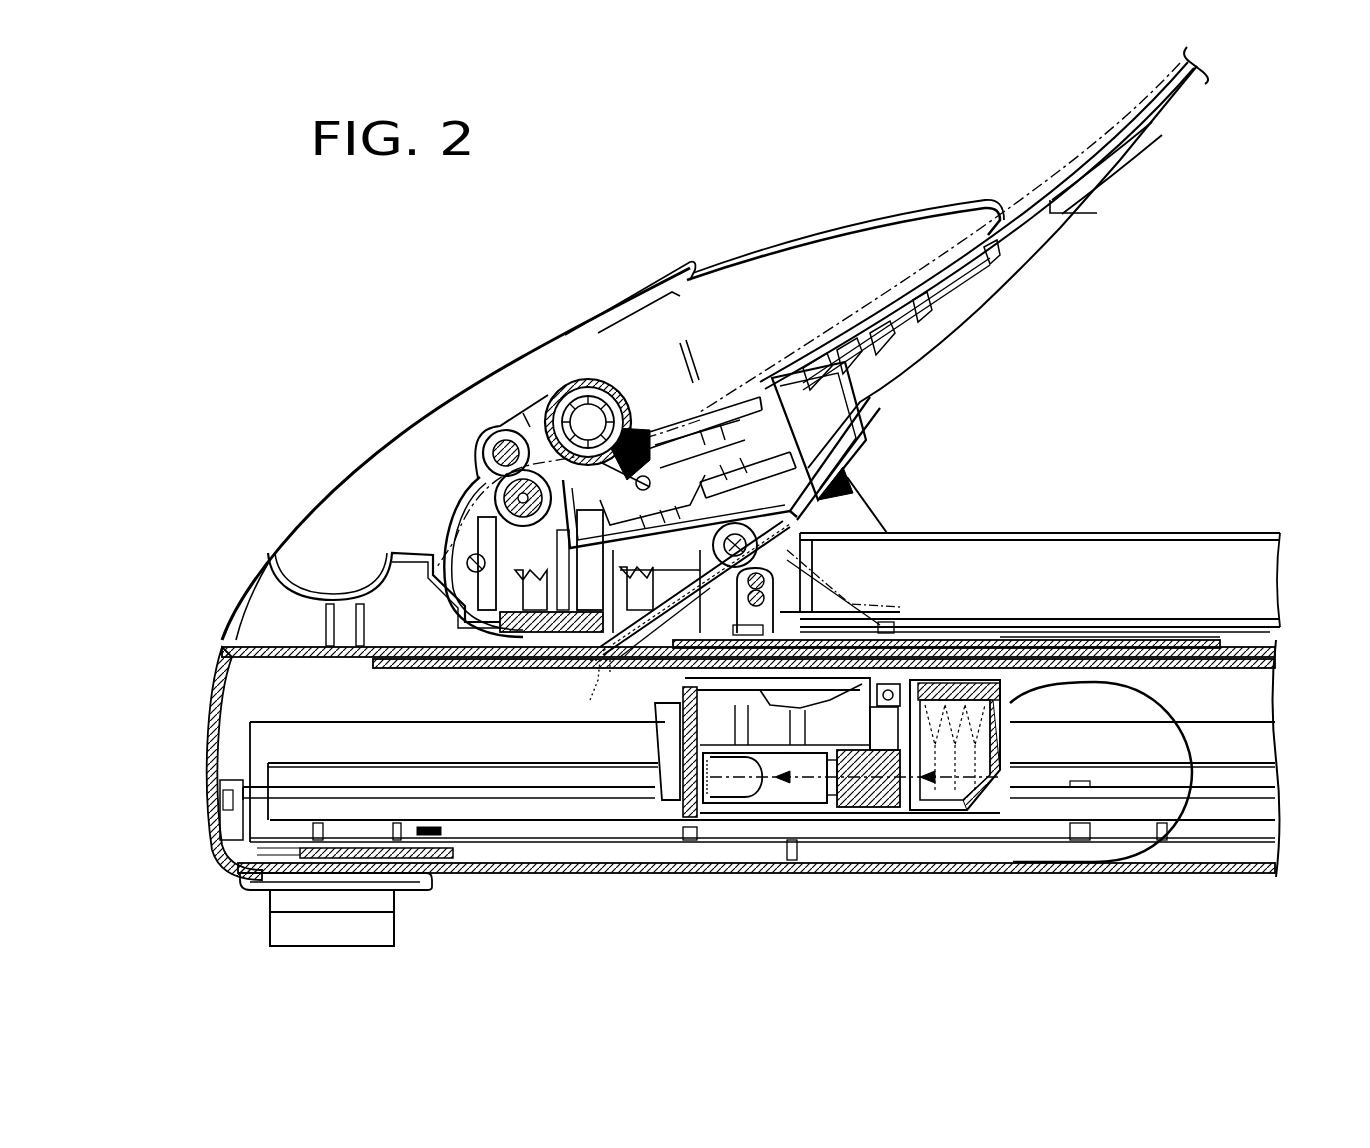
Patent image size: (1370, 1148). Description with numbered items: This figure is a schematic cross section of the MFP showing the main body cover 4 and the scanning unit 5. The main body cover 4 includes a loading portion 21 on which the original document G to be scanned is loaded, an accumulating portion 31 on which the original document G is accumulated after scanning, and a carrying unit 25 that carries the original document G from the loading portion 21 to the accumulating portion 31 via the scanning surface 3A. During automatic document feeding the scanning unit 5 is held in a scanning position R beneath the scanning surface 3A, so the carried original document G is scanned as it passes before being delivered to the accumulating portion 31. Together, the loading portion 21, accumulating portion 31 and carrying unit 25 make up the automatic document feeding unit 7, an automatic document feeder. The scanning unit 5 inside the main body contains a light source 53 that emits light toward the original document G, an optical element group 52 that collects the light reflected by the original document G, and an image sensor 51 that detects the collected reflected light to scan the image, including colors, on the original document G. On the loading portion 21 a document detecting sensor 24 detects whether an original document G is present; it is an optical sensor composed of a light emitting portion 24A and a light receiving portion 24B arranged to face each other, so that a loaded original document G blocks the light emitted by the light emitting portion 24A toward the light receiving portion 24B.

The scanning surface 3A is at (1267, 663).
The accumulating portion 31 is at (1100, 608).
The main body cover 4 is at (430, 425).
The automatic document feeding unit 7 is at (606, 276).
The loading portion 21 is at (977, 208).
The original document G is at (1123, 120).
The document detecting sensor 24 is at (797, 200).
The light emitting portion 24A is at (647, 425).
The light receiving portion 24B is at (727, 400).
The carrying unit 25 is at (470, 482).
The scanning position R is at (591, 693).
The scanning unit 5 is at (865, 832).
The image sensor 51 is at (717, 792).
The optical element group 52 is at (947, 797).
The light source 53 is at (891, 686).